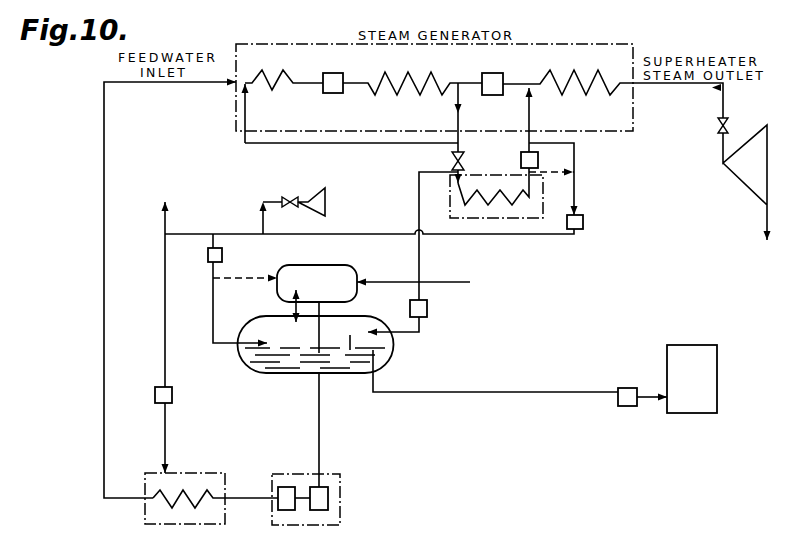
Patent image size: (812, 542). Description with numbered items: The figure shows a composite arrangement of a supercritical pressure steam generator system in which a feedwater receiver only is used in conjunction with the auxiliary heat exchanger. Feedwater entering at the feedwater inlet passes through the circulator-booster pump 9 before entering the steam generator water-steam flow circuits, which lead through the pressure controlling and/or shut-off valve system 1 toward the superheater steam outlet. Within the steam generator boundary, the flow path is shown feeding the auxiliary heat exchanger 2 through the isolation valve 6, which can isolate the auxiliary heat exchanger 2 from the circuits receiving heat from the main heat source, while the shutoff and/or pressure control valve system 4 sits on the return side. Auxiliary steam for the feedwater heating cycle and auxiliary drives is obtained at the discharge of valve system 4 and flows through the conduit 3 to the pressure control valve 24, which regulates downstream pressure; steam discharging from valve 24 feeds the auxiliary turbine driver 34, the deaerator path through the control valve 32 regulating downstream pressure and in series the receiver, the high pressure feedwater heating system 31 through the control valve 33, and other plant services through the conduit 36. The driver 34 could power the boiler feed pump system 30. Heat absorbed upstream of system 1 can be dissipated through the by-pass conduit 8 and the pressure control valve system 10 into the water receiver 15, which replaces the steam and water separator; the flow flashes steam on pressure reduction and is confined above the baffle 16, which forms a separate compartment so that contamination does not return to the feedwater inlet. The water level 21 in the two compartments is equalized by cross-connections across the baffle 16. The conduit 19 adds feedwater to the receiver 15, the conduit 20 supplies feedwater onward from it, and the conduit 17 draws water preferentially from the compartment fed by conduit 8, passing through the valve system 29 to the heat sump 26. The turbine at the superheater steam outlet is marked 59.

The pressure controlling and/or shut-off valve system 1 is at (497, 73).
The auxiliary heat exchanger 2 is at (450, 209).
The conduit 3 is at (577, 172).
The shutoff and/or pressure control valve system 4 is at (538, 163).
The isolation valve 6 is at (465, 160).
The by-pass conduit 8 is at (419, 206).
The circulator-booster pump 9 is at (338, 75).
The pressure control valve system 10 is at (428, 308).
The feedwater receiver 15 is at (256, 373).
The baffle 16 is at (388, 353).
The conduit 17 is at (540, 377).
The conduit 19 is at (398, 281).
The conduit 20 is at (319, 418).
The water level 21 is at (278, 343).
The pressure control valve 24 is at (583, 223).
The heat sump 26 is at (692, 379).
The valve system 29 is at (630, 388).
The boiler feed pump system 30 is at (297, 265).
The high pressure feedwater heating system 31 is at (225, 514).
The control valve 32 is at (208, 256).
The control valve 33 is at (143, 430).
The auxiliary turbine driver 34 is at (326, 202).
The conduit 36 is at (163, 224).
The turbine 59 is at (744, 179).